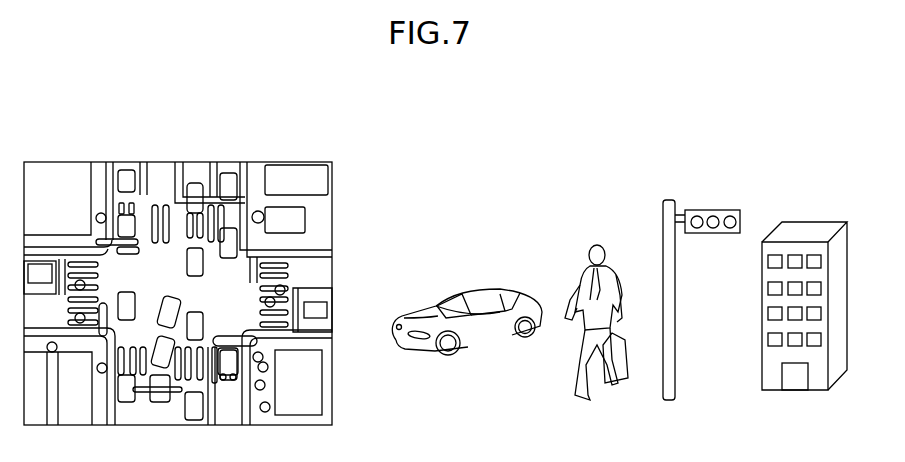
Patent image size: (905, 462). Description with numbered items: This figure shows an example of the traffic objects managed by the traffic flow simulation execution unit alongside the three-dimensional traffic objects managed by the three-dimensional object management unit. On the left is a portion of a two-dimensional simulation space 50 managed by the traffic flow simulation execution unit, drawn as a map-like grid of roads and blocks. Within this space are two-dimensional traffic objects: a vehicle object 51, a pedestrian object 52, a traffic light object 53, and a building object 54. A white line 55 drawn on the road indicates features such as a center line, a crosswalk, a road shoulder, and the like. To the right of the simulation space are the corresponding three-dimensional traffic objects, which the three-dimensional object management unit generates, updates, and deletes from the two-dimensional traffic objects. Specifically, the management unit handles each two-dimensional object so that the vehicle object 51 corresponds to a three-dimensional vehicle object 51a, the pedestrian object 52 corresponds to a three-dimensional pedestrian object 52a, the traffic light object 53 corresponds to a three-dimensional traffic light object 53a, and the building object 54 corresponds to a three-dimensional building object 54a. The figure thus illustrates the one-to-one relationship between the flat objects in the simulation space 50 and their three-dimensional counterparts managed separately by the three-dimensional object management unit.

The two-dimensional simulation space 50 is at (50, 162).
The vehicle object 51 is at (181, 300).
The pedestrian object 52 is at (283, 287).
The traffic light object 53 is at (130, 254).
The building object 54 is at (292, 165).
The white line 55 is at (185, 162).
The three-dimensional vehicle object 51a is at (470, 290).
The three-dimensional pedestrian object 52a is at (598, 246).
The three-dimensional traffic light object 53a is at (672, 200).
The three-dimensional building object 54a is at (800, 222).